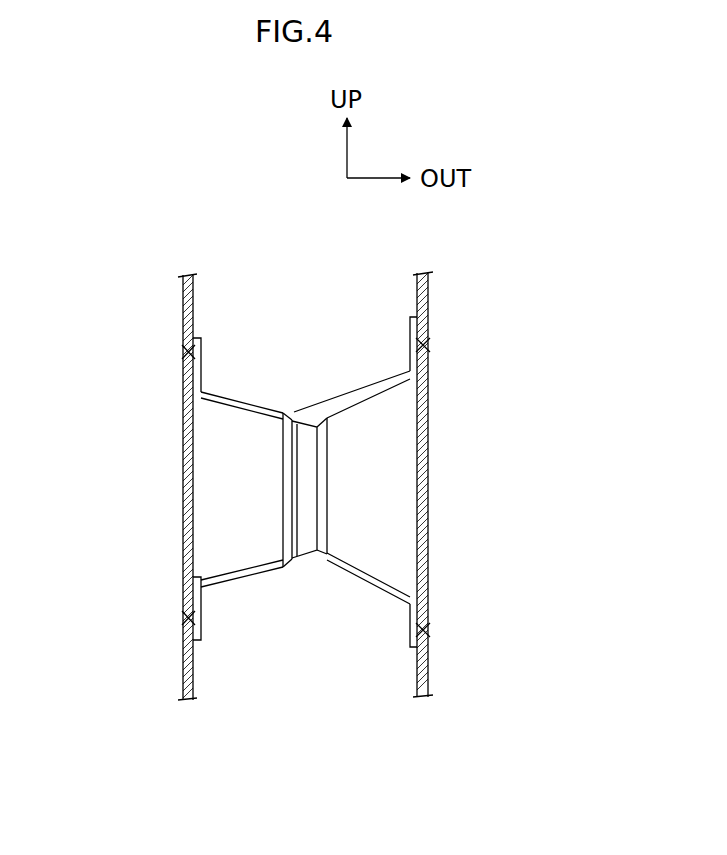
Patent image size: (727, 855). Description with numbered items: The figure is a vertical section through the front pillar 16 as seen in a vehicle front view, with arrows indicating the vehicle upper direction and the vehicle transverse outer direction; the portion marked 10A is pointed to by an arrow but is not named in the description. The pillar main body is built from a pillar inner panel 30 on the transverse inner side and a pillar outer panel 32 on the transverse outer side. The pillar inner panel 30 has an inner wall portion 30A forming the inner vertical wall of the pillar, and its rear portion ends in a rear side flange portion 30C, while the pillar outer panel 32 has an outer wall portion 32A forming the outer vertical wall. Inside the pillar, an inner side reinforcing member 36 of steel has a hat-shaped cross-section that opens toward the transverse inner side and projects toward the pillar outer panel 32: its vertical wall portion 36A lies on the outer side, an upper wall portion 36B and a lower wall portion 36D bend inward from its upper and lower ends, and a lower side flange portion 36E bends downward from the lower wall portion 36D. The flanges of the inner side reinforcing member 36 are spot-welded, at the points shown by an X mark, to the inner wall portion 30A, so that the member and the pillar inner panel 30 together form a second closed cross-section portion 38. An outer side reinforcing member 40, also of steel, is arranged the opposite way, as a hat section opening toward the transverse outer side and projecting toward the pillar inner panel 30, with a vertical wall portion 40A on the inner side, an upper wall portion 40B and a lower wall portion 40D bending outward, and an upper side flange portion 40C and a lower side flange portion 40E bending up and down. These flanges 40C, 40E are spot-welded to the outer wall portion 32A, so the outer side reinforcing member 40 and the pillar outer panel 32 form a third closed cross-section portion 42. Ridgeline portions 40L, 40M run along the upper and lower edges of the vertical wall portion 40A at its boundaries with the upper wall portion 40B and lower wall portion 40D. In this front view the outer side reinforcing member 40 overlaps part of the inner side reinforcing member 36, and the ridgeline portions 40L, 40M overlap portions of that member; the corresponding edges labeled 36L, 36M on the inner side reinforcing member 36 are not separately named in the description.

The front pillar 16 is at (93, 287).
The vehicle side structure 10A is at (500, 288).
The pillar inner panel 30 is at (183, 470).
The inner wall portion 30A is at (183, 507).
The rear side flange portion 30C is at (201, 352).
The pillar outer panel 32 is at (428, 448).
The outer wall portion 32A is at (428, 486).
The inner side reinforcing member 36 is at (240, 592).
The vertical wall portion 36A is at (327, 490).
The upper wall portion 36B is at (241, 400).
The lower wall portion 36D is at (284, 572).
The lower side flange portion 36E is at (202, 640).
The upper joint of first brace 36L is at (329, 414).
The lower joint of first brace 36M is at (329, 552).
The second closed cross-section portion 38 is at (243, 488).
The outer side reinforcing member 40 is at (372, 612).
The vertical wall portion 40A is at (283, 475).
The upper wall portion 40B is at (350, 393).
The upper side flange portion 40C is at (410, 345).
The lower wall portion 40D is at (337, 592).
The lower side flange portion 40E is at (403, 650).
The ridgeline portion 40L is at (277, 411).
The ridgeline portion 40M is at (283, 555).
The third closed cross-section portion 42 is at (392, 537).